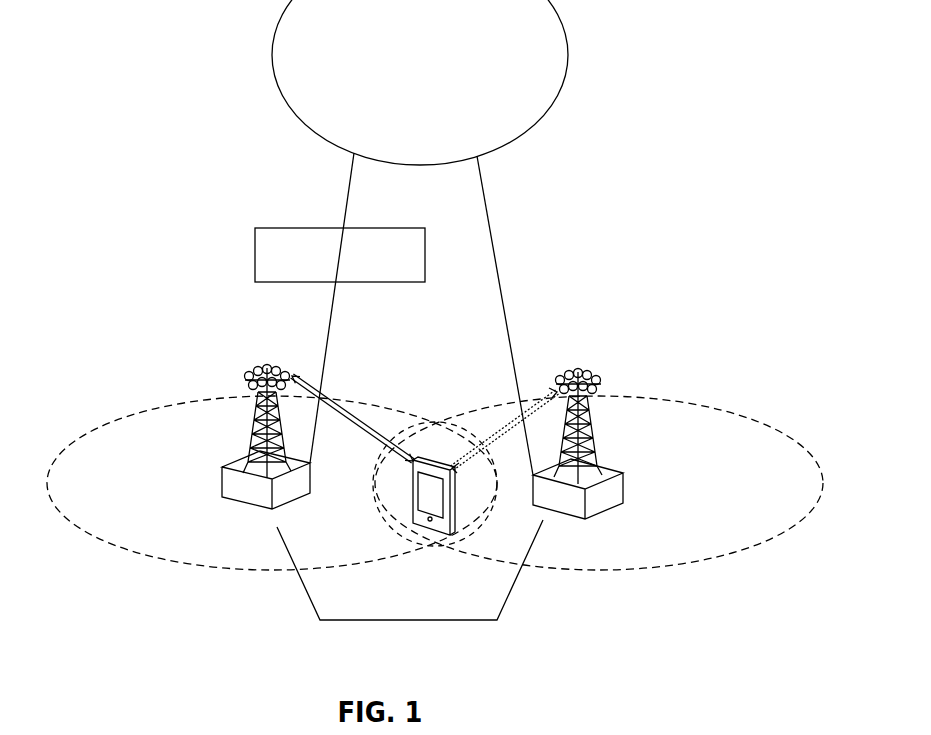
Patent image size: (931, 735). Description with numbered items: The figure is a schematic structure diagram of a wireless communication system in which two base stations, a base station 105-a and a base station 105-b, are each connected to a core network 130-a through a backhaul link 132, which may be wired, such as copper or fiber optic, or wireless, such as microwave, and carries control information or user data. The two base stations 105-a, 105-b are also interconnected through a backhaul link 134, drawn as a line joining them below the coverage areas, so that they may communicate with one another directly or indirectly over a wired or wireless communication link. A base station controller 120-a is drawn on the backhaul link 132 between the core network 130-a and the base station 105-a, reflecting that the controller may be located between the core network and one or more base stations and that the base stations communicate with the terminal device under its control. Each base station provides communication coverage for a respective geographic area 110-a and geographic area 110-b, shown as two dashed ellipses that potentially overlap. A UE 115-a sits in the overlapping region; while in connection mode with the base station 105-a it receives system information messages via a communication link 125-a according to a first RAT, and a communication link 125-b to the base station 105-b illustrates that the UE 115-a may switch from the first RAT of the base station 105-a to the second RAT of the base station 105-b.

The core network 130-a is at (420, 82).
The backhaul link 132 is at (348, 188).
The base station controller 120-a is at (340, 255).
The geographic area 110-a is at (202, 401).
The geographic area 110-b is at (710, 408).
The base station 105-a is at (222, 497).
The base station 105-b is at (610, 510).
The UE 115-a is at (412, 500).
The communication link 125-a is at (326, 398).
The communication link 125-b is at (521, 417).
The backhaul link 134 is at (428, 620).